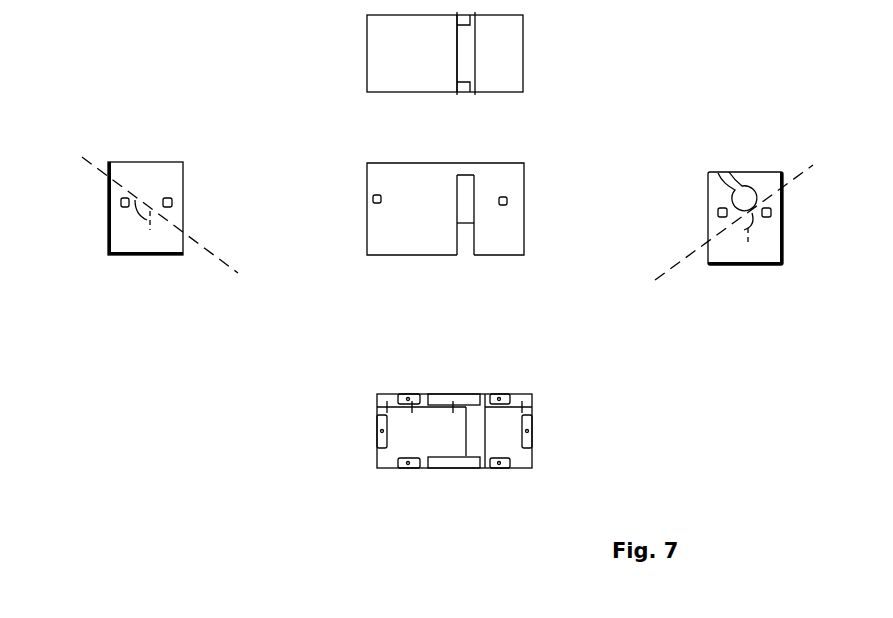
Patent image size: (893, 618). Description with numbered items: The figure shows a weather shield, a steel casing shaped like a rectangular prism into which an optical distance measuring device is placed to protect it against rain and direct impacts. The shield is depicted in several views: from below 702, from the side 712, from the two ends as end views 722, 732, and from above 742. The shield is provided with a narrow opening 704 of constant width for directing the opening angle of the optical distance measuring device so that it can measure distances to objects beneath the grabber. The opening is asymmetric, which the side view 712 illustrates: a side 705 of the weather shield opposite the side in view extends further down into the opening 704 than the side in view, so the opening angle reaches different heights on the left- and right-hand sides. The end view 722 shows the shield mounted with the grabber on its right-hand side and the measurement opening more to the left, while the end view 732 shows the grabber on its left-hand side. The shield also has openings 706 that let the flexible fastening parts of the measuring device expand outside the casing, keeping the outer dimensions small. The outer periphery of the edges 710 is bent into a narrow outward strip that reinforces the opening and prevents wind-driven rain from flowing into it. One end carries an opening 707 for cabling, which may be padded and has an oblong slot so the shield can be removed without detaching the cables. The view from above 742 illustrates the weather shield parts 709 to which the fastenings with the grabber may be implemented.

The view from below 702 is at (334, 43).
The narrow opening 704 is at (462, 40).
The side of the weather shield 705 is at (464, 213).
The openings 706 is at (377, 203).
The opening for cabling 707 is at (723, 178).
The weather shield parts 709 is at (500, 393).
The edges 710 is at (108, 250).
The side view 712 is at (367, 153).
The end view 722 is at (139, 153).
The end view 732 is at (734, 161).
The view from above 742 is at (367, 386).